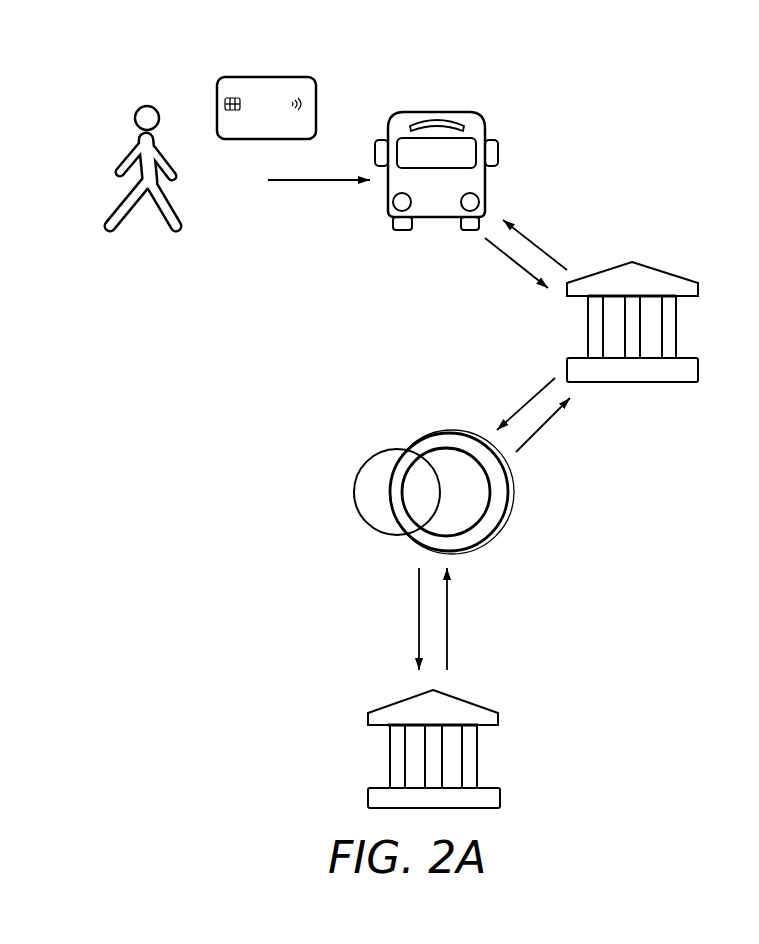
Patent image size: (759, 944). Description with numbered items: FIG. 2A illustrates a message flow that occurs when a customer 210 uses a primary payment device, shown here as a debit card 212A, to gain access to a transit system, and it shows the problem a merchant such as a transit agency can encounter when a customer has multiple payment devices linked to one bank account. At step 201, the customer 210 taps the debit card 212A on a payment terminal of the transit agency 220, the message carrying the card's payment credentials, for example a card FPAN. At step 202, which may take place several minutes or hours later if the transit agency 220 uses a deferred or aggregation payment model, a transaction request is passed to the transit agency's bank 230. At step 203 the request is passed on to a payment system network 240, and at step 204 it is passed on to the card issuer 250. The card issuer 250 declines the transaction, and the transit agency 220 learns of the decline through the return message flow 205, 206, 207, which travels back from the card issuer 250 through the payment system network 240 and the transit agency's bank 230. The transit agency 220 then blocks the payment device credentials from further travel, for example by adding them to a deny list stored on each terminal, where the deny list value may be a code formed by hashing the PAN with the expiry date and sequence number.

The customer 210 is at (147, 105).
The debit card 212A is at (263, 77).
The card tap step 201 is at (307, 182).
The transit agency 220 is at (433, 112).
The transit agency's bank 230 is at (657, 270).
The transaction request step 202 is at (513, 265).
The decline message flow 207 is at (535, 245).
The request forwarding step 203 is at (525, 403).
The decline message flow 206 is at (545, 428).
The payment system network 240 is at (383, 448).
The request to issuer step 204 is at (415, 620).
The decline message flow 205 is at (450, 619).
The card issuer 250 is at (500, 717).